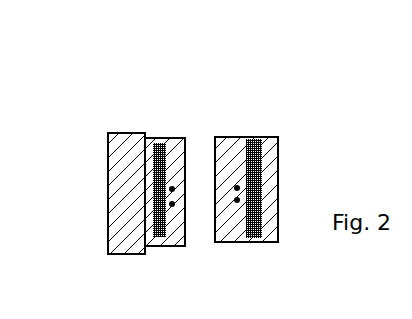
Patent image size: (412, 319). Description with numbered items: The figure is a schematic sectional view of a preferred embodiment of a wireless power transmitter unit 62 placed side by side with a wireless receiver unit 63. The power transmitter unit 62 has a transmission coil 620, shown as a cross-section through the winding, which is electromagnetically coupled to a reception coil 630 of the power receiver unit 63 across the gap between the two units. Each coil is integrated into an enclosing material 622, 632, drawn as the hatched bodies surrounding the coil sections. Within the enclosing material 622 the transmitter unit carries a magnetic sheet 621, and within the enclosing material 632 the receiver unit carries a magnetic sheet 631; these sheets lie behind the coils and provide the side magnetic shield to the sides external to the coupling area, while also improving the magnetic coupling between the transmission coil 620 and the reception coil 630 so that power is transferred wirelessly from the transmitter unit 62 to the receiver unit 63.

The wireless power transmitter unit 62 is at (157, 95).
The enclosing material 622 is at (127, 131).
The magnetic sheet 621 is at (158, 248).
The transmission coil 620 is at (180, 217).
The wireless receiver unit 63 is at (222, 100).
The enclosing material 632 is at (266, 137).
The magnetic sheet 631 is at (255, 243).
The reception coil 630 is at (236, 205).